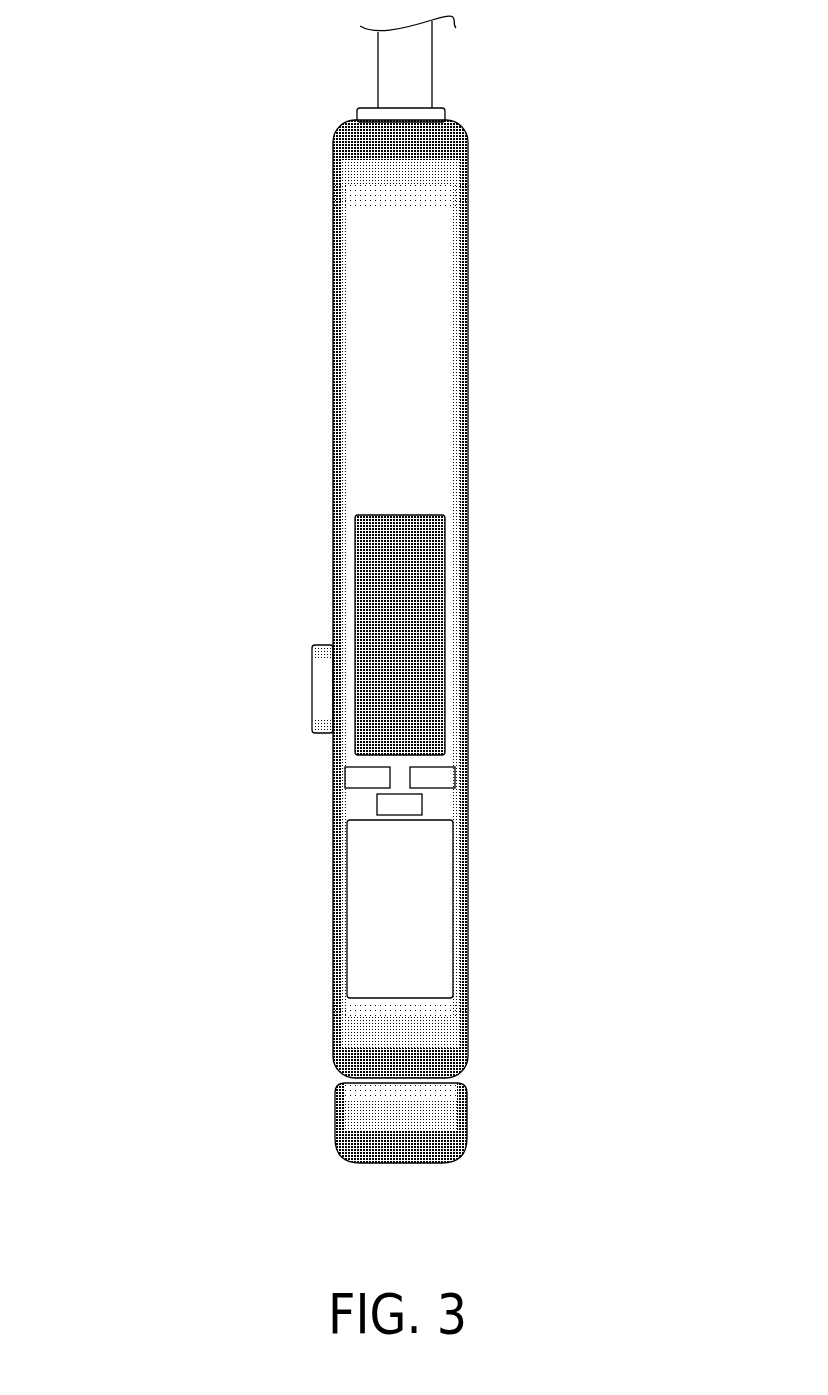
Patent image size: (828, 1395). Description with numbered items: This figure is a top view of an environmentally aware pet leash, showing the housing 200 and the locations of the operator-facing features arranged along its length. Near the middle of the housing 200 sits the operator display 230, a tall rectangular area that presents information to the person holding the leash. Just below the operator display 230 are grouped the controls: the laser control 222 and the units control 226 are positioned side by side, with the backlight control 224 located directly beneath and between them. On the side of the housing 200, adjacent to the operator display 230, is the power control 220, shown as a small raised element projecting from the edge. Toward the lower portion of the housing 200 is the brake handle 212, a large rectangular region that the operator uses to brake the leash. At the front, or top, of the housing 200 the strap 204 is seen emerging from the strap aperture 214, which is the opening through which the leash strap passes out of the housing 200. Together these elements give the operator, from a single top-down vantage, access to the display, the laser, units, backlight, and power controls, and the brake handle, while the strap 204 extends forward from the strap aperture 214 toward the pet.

The housing 200 is at (452, 305).
The strap 204 is at (400, 56).
The strap aperture 214 is at (433, 108).
The operator display 230 is at (412, 562).
The power control 220 is at (318, 678).
The laser control 222 is at (360, 777).
The backlight control 224 is at (397, 812).
The units control 226 is at (443, 778).
The brake handle 212 is at (425, 890).